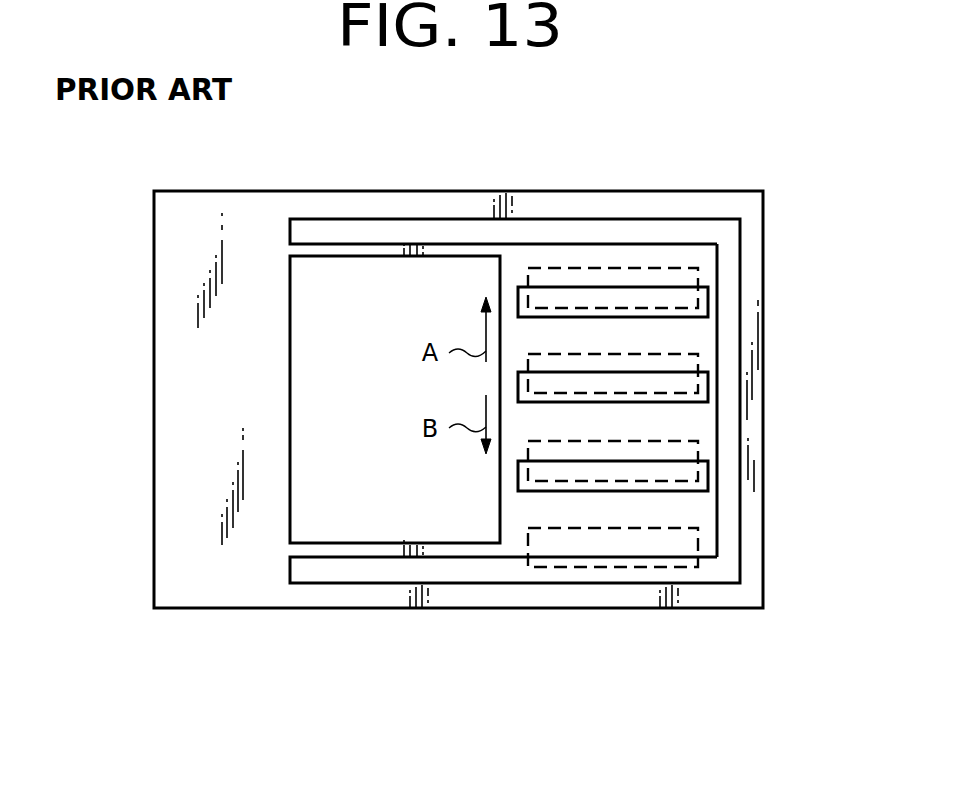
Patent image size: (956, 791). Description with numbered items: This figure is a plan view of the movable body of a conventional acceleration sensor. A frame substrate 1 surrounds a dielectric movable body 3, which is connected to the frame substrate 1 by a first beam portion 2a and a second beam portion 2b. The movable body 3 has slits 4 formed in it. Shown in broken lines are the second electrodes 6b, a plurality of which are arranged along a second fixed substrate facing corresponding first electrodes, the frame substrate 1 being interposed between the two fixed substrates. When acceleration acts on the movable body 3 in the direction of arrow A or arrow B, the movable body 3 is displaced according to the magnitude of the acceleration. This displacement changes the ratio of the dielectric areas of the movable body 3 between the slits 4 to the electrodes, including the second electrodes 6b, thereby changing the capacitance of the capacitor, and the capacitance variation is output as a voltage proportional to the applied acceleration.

The frame substrate 1 is at (600, 205).
The first beam portion 2a is at (370, 250).
The second beam portion 2b is at (435, 550).
The movable body 3 is at (682, 255).
The slits 4 is at (686, 300).
The second electrodes 6b is at (684, 352).